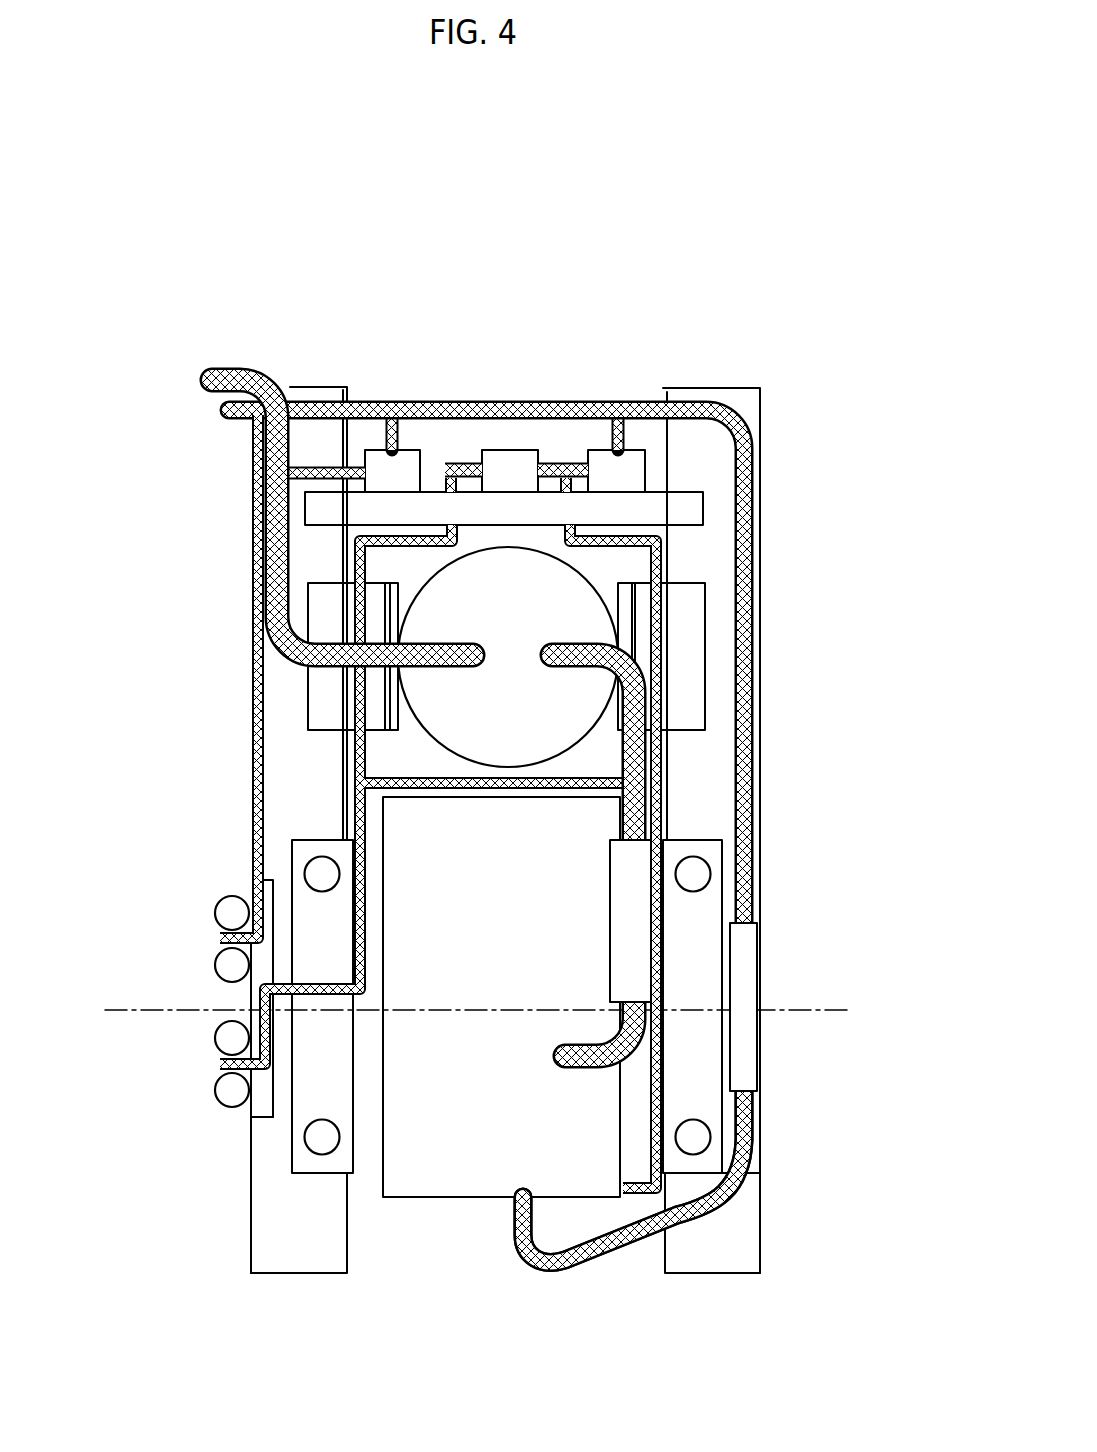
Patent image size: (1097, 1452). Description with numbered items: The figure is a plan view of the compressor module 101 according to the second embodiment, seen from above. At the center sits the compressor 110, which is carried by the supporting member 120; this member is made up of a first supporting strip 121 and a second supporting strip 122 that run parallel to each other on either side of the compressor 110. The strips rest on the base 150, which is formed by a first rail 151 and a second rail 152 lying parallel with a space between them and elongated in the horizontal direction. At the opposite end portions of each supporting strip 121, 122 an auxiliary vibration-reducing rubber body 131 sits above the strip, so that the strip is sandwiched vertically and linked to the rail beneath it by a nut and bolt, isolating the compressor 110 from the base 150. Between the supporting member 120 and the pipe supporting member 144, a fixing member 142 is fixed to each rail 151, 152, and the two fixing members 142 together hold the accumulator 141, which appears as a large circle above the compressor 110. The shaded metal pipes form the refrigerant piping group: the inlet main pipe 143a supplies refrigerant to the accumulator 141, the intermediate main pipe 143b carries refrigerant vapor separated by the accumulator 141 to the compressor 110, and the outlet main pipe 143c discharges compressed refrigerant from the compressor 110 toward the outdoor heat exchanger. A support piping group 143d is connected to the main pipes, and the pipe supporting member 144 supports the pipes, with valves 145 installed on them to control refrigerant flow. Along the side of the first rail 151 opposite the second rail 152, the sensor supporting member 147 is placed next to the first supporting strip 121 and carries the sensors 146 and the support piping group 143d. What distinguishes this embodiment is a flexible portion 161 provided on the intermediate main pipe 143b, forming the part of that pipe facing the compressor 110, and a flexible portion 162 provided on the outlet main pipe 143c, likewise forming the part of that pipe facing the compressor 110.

The compressor module 101 is at (476, 195).
The compressor 110 is at (442, 1180).
The supporting member 120 is at (466, 1056).
The first supporting strip 121 is at (307, 1103).
The second supporting strip 122 is at (700, 1072).
The auxiliary vibration-reducing rubber body 131 is at (322, 870).
The accumulator 141 is at (565, 607).
The fixing member 142 is at (325, 688).
The inlet main pipe 143a is at (278, 578).
The intermediate main pipe 143b is at (640, 790).
The outlet main pipe 143c is at (581, 1252).
The support piping group 143d is at (253, 773).
The pipe supporting member 144 is at (690, 509).
The valve 145 is at (600, 458).
The sensor 146 is at (232, 965).
The sensor supporting member 147 is at (262, 1108).
The base 150 is at (505, 1281).
The first rail 151 is at (300, 1255).
The second rail 152 is at (716, 1252).
The flexible portion 161 is at (638, 915).
The flexible portion 162 is at (744, 975).